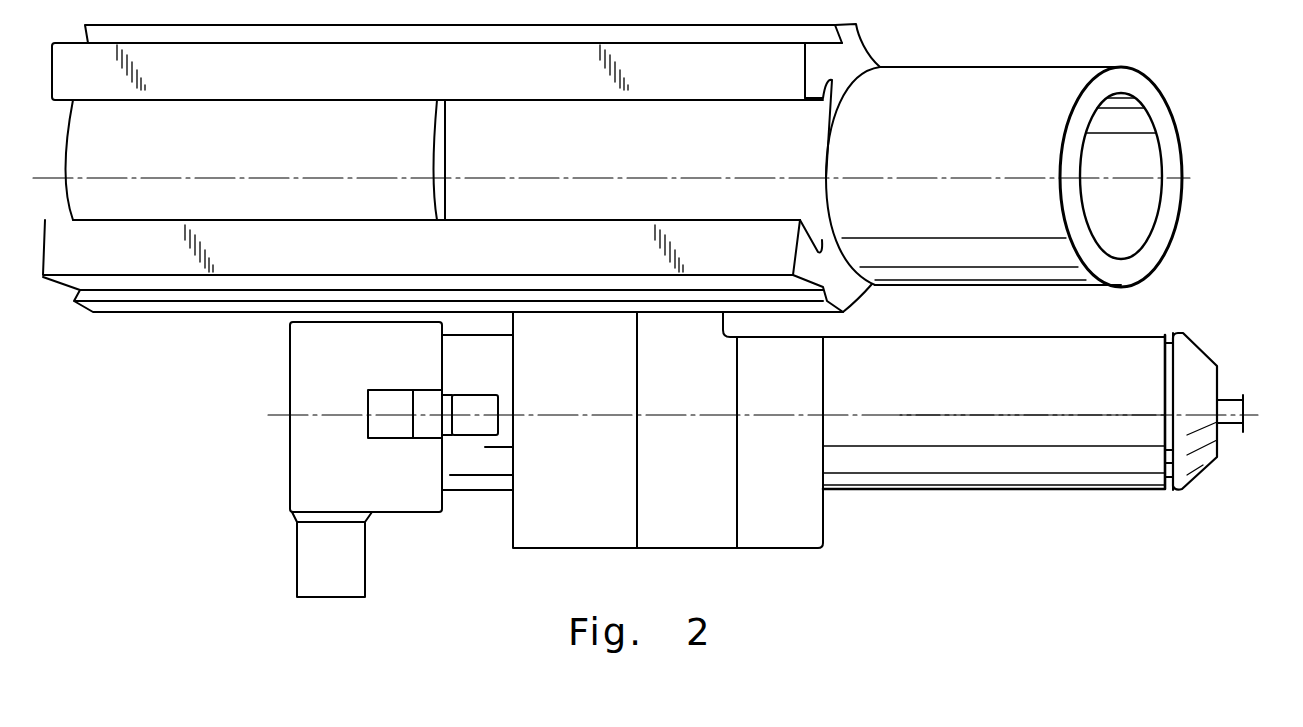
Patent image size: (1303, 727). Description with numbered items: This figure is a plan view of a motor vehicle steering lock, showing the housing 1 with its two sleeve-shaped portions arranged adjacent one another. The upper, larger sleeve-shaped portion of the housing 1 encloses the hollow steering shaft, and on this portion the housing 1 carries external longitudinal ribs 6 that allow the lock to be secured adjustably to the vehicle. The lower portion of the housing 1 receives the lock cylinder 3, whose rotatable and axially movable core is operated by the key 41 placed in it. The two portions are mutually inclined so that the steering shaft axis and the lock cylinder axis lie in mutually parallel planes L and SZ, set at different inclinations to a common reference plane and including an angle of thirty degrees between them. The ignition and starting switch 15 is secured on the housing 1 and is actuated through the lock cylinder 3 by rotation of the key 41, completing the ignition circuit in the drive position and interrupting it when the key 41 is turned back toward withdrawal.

The housing 1 is at (1147, 260).
The lock cylinder 3 is at (1198, 468).
The external longitudinal ribs 6 is at (853, 52).
The ignition and starting switch 15 is at (300, 477).
The key 41 is at (1227, 401).
The plane containing the steering shaft axis L is at (975, 178).
The plane containing the lock cylinder axis SZ is at (975, 416).